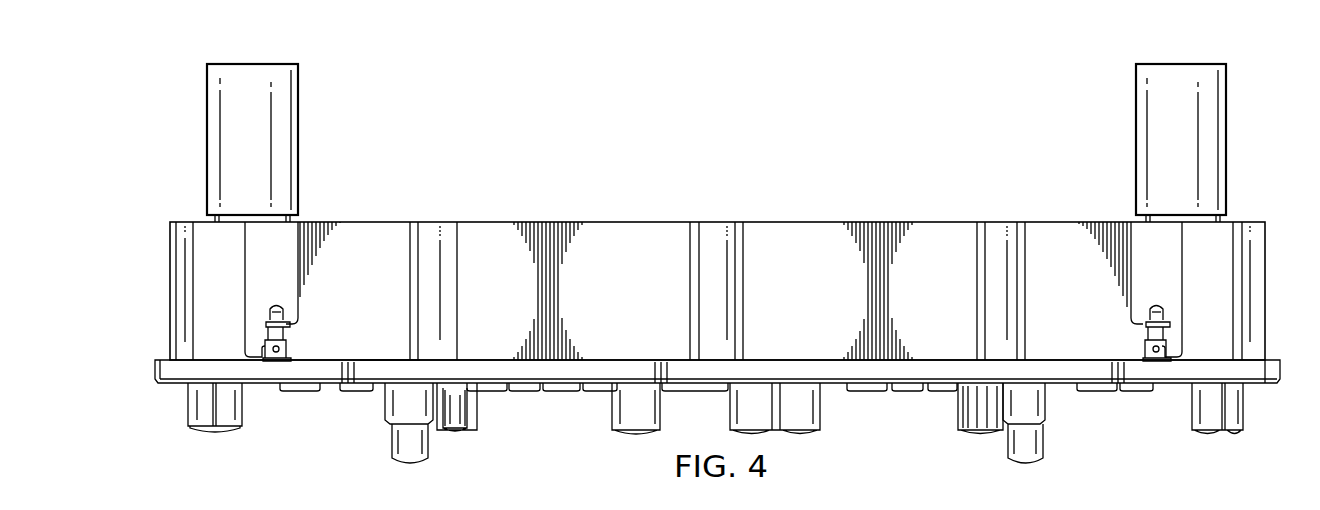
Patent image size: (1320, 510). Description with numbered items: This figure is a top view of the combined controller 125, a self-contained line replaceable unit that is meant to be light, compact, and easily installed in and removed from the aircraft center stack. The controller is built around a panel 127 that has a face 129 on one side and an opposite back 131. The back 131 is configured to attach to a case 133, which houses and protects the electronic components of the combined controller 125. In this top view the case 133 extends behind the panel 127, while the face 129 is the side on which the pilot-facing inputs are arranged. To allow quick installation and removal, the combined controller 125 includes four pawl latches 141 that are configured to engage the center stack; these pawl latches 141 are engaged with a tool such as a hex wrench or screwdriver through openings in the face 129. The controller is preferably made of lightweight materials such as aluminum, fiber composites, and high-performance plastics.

The combined controller 125 is at (597, 102).
The panel 127 is at (165, 394).
The face 129 is at (262, 391).
The back 131 is at (393, 358).
The case 133 is at (812, 228).
The pawl latches 141 is at (290, 349).